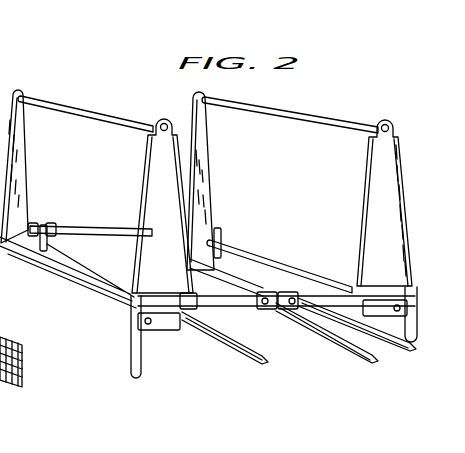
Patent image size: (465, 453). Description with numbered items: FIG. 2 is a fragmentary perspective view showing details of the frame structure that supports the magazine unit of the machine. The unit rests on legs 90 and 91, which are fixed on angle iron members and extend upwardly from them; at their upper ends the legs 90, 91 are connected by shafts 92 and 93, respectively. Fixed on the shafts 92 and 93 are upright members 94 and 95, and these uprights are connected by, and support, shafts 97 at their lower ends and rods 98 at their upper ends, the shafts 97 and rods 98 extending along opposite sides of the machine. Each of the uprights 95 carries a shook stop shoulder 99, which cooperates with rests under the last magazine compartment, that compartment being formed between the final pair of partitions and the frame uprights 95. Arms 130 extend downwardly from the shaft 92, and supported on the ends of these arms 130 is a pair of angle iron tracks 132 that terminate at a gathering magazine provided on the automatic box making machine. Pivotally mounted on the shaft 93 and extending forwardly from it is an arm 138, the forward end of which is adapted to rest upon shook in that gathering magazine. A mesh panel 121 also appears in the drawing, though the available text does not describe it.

The leg 90 is at (0, 267).
The leg 91 is at (132, 345).
The shaft 92 is at (80, 228).
The shaft 93 is at (223, 307).
The upright member 94 is at (64, 152).
The upright member 95 is at (160, 186).
The shaft 97 is at (98, 294).
The rod 98 is at (72, 110).
The shook stop shoulder 99 is at (176, 329).
The mesh panel 121 is at (0, 399).
The arm 130 is at (50, 243).
The angle iron track 132 is at (233, 363).
The arm 138 is at (340, 353).